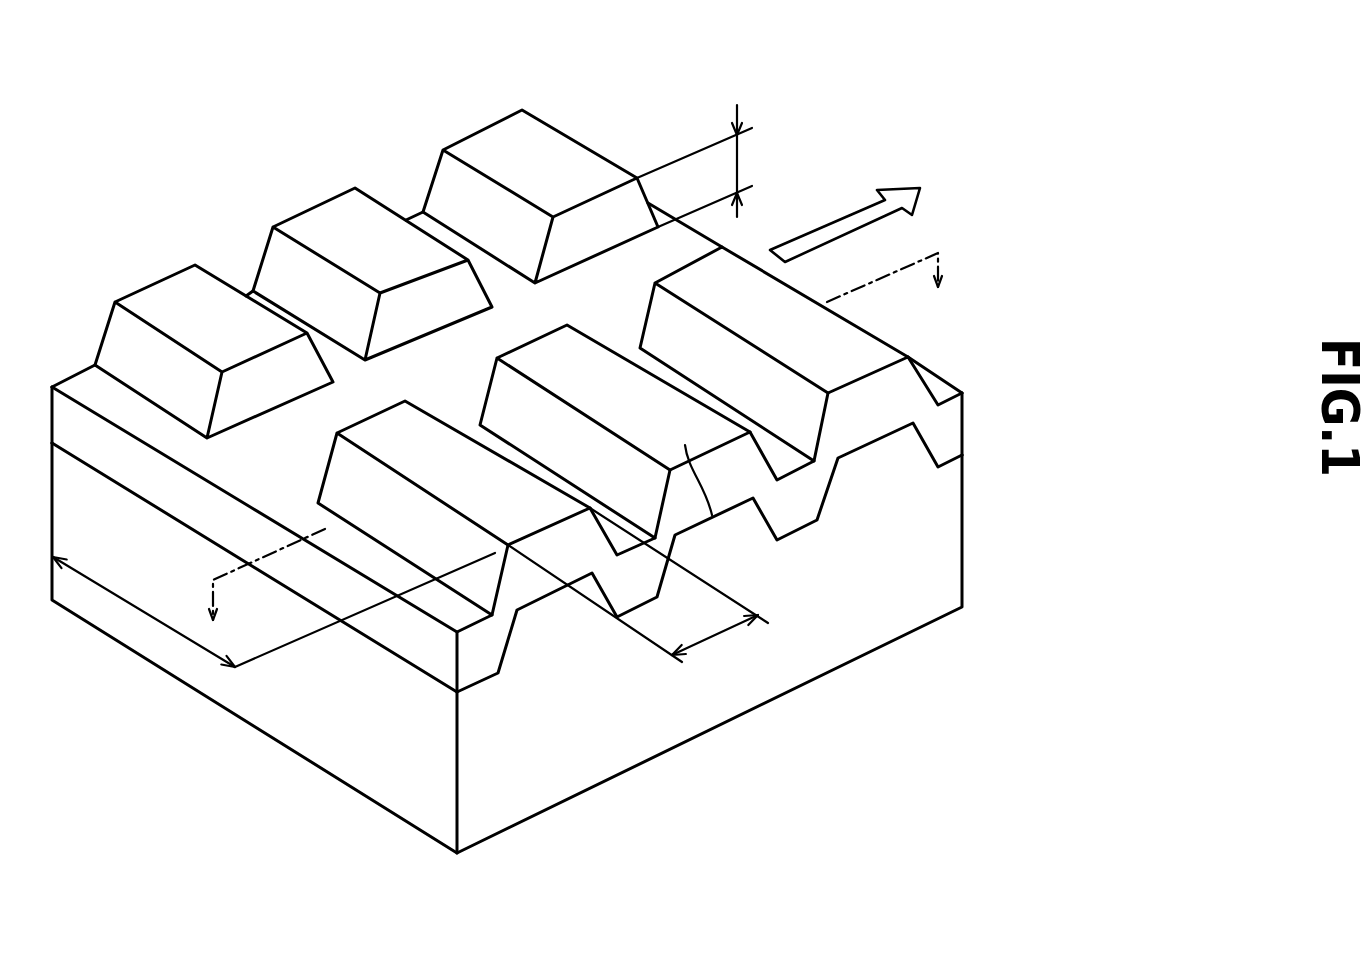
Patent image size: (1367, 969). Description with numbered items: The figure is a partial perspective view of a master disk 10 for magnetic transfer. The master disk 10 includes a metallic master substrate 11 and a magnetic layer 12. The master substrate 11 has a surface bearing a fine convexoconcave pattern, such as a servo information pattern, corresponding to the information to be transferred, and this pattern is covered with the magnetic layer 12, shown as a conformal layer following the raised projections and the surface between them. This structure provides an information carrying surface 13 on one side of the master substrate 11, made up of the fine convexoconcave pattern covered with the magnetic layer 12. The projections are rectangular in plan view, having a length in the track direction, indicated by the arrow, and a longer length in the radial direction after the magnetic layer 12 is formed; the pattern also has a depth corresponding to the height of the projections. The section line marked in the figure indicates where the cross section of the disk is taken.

The master disk 10 is at (207, 193).
The master substrate 11 is at (947, 532).
The magnetic layer 12 is at (972, 418).
The information carrying surface 13 is at (422, 430).